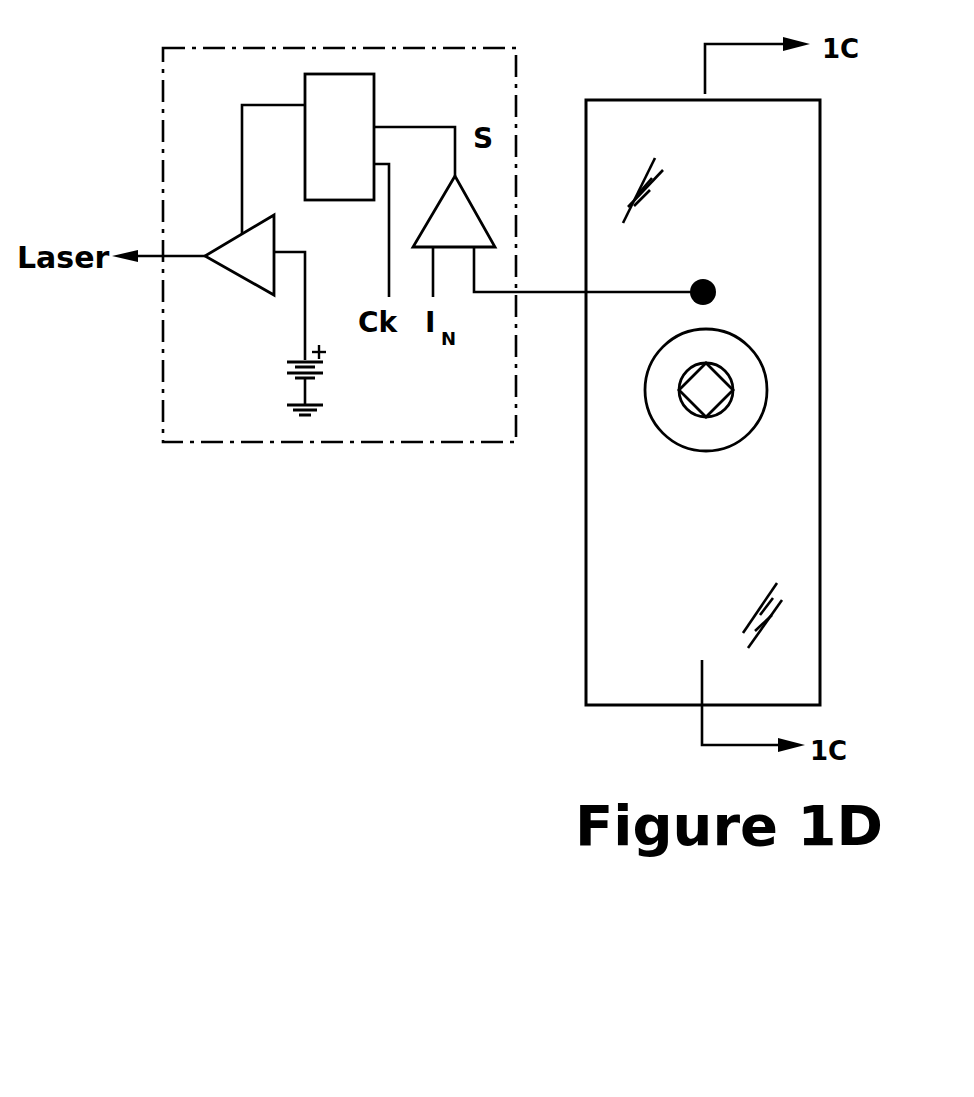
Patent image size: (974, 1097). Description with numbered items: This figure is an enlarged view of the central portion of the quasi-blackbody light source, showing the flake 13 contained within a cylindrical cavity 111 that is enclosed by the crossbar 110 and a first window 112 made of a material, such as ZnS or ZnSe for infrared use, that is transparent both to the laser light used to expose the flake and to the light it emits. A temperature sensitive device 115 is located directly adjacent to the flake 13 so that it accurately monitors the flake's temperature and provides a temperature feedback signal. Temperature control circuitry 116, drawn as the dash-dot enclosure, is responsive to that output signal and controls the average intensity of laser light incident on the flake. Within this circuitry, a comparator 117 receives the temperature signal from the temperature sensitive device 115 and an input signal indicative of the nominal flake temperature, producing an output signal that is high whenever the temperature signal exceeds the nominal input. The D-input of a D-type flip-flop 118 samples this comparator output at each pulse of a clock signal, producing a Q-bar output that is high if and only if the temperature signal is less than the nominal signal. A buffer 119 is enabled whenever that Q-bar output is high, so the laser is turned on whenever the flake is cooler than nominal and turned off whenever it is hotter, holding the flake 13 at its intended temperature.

The flake 13 is at (705, 387).
The crossbar 110 is at (737, 551).
The cylindrical cavity 111 is at (690, 412).
The first window 112 is at (733, 428).
The temperature sensitive device 115 is at (715, 283).
The temperature control circuitry 116 is at (458, 425).
The comparator 117 is at (466, 210).
The D-type flip-flop 118 is at (362, 96).
The buffer 119 is at (253, 263).